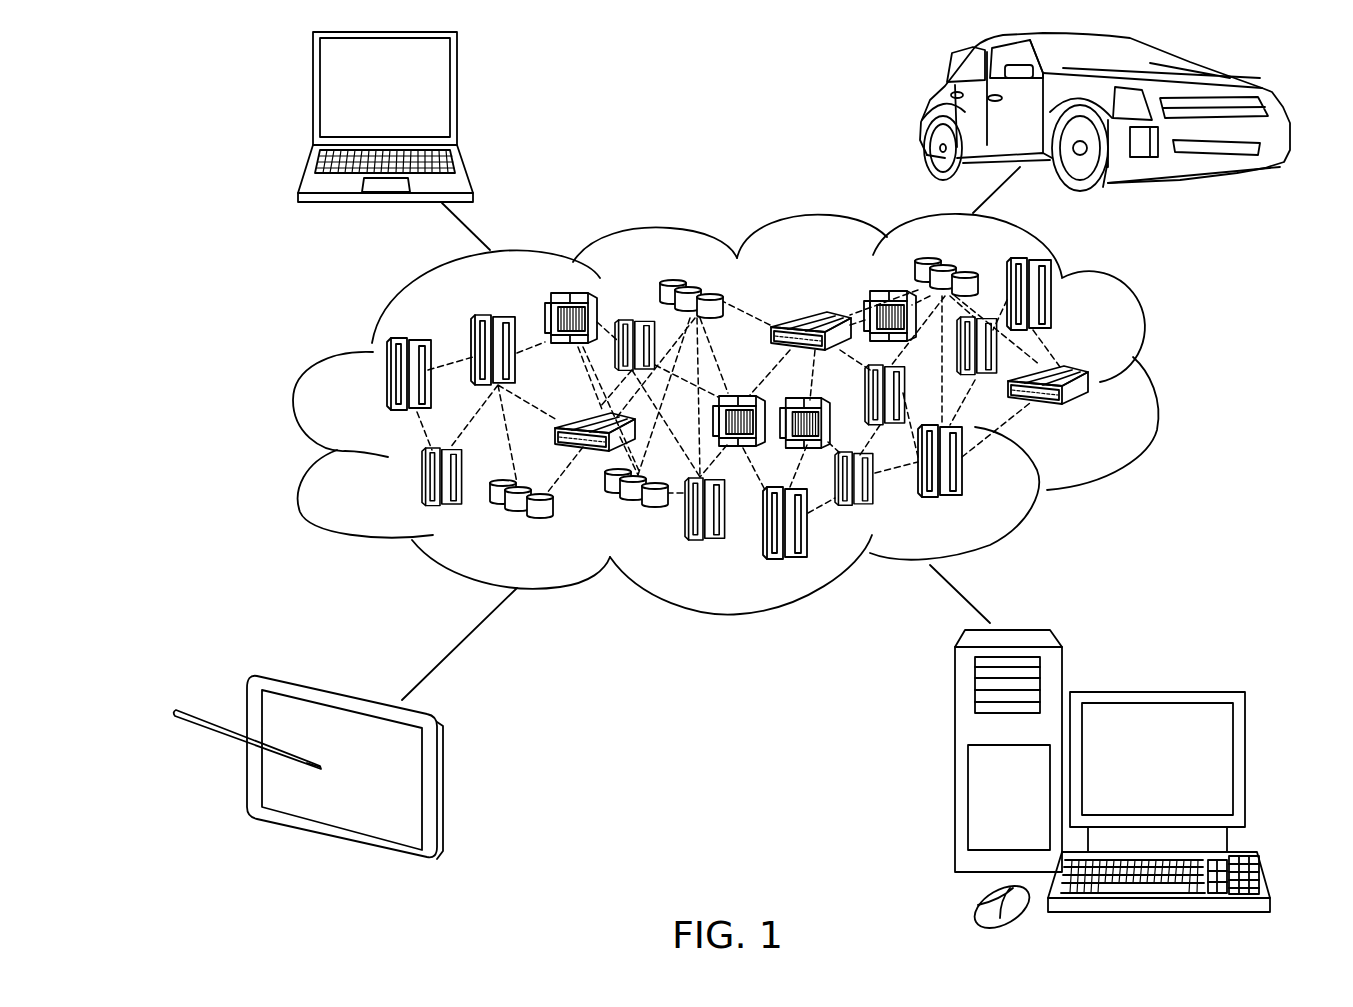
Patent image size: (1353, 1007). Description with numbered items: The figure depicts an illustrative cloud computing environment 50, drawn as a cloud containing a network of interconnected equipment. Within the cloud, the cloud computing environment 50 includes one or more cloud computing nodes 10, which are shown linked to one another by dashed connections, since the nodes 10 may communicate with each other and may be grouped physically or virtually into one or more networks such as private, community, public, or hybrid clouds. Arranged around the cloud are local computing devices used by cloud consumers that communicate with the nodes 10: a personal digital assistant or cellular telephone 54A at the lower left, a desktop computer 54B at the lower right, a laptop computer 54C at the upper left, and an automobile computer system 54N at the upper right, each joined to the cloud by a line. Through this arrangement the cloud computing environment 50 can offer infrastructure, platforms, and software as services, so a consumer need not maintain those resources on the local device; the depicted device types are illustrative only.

The cloud computing node 10 is at (1097, 418).
The cloud computing environment 50 is at (754, 414).
The personal digital assistant (PDA) or cellular telephone 54A is at (447, 790).
The desktop computer 54B is at (1155, 690).
The laptop computer 54C is at (458, 97).
The automobile computer system 54N is at (921, 113).